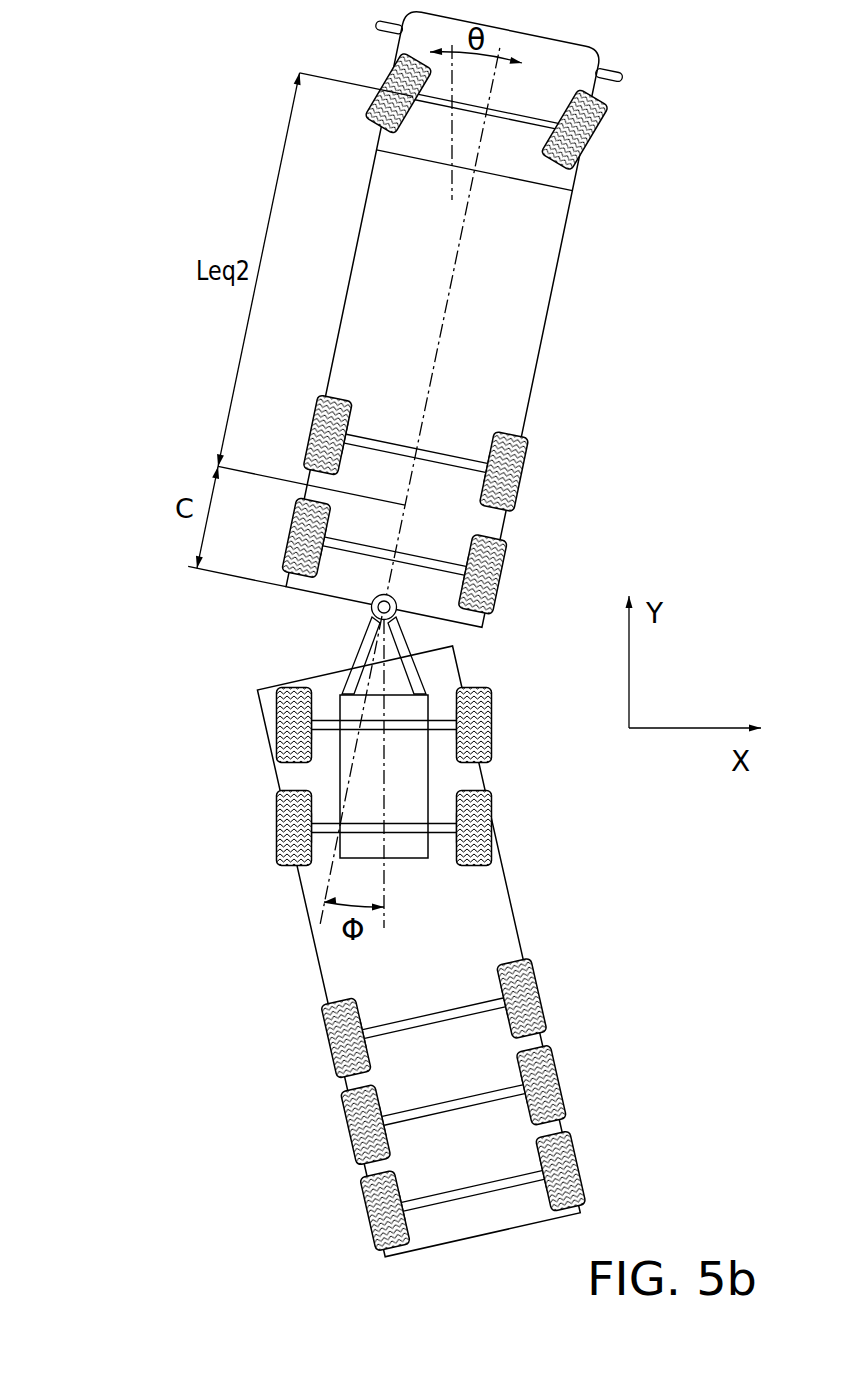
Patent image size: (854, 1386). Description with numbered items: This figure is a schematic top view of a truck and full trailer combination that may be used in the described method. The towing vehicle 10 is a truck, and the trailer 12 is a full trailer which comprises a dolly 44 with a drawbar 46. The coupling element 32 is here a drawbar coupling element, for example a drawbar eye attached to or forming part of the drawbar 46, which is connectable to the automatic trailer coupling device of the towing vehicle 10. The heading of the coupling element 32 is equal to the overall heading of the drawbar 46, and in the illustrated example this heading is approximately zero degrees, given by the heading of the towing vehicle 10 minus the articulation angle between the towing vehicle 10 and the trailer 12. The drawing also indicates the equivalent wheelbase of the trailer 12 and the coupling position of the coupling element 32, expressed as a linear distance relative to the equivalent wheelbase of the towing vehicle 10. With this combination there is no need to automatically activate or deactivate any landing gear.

The towing vehicle 10 is at (548, 319).
The trailer 12 is at (148, 611).
The coupling element 32 is at (371, 609).
The dolly 44 is at (340, 772).
The drawbar 46 is at (355, 643).